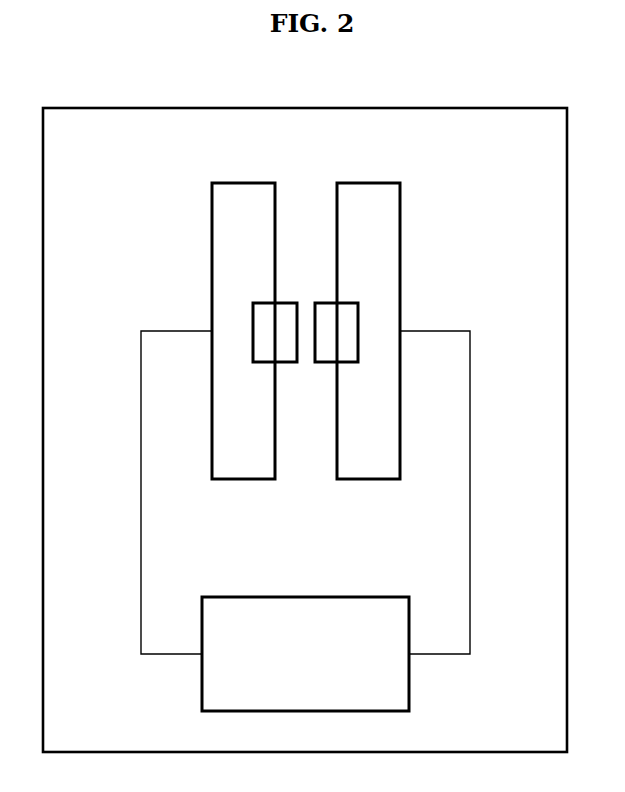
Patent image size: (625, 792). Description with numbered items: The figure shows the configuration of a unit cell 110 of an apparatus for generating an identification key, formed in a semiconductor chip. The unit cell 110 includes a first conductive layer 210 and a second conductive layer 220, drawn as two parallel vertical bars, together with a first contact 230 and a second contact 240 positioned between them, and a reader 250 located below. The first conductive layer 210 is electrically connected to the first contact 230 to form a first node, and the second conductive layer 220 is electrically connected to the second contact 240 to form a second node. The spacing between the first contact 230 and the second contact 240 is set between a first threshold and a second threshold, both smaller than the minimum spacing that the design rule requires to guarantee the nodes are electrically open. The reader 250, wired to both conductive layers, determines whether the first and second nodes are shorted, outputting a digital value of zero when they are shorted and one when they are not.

The unit cell 110 is at (303, 108).
The first conductive layer 210 is at (246, 183).
The second conductive layer 220 is at (367, 183).
The first contact 230 is at (253, 313).
The second contact 240 is at (358, 313).
The reader 250 is at (305, 596).